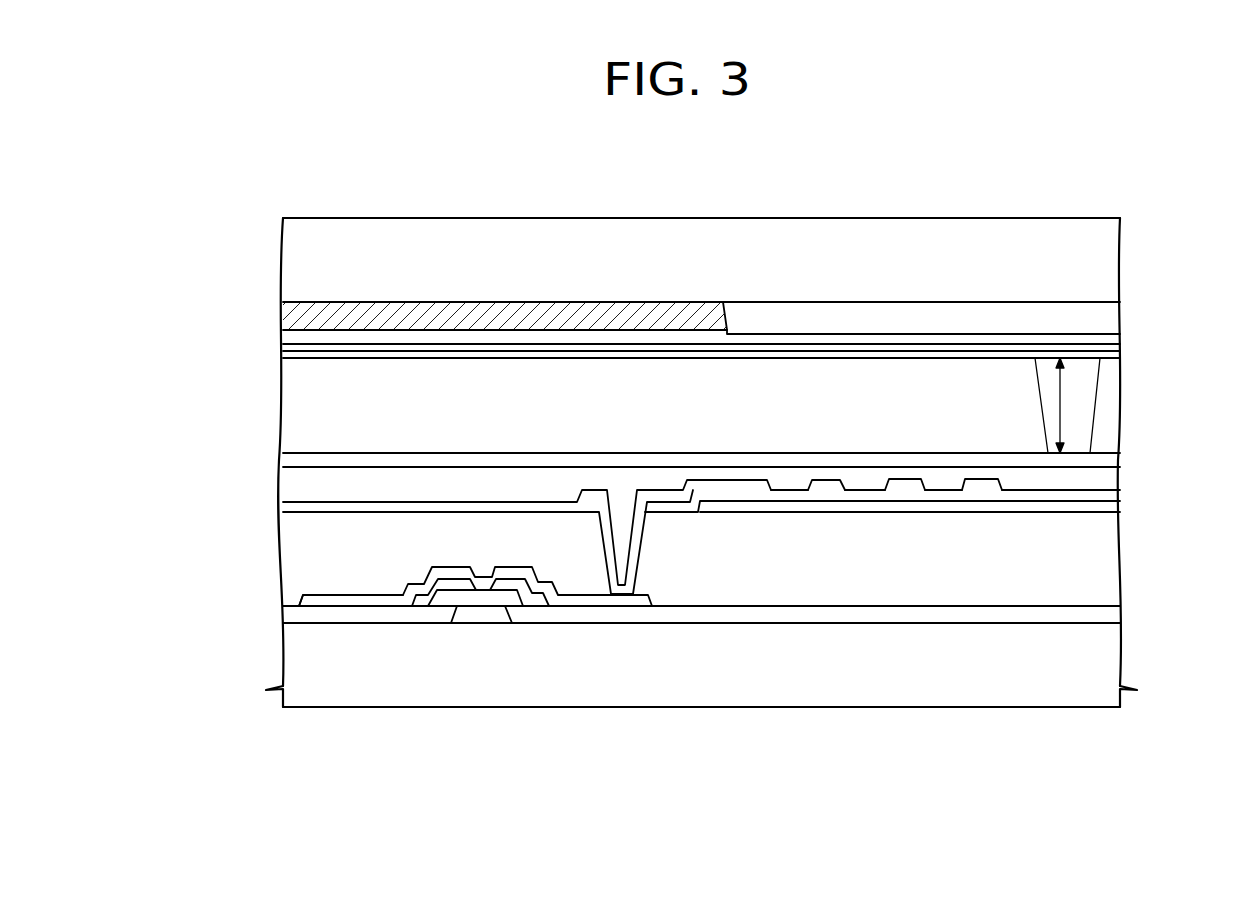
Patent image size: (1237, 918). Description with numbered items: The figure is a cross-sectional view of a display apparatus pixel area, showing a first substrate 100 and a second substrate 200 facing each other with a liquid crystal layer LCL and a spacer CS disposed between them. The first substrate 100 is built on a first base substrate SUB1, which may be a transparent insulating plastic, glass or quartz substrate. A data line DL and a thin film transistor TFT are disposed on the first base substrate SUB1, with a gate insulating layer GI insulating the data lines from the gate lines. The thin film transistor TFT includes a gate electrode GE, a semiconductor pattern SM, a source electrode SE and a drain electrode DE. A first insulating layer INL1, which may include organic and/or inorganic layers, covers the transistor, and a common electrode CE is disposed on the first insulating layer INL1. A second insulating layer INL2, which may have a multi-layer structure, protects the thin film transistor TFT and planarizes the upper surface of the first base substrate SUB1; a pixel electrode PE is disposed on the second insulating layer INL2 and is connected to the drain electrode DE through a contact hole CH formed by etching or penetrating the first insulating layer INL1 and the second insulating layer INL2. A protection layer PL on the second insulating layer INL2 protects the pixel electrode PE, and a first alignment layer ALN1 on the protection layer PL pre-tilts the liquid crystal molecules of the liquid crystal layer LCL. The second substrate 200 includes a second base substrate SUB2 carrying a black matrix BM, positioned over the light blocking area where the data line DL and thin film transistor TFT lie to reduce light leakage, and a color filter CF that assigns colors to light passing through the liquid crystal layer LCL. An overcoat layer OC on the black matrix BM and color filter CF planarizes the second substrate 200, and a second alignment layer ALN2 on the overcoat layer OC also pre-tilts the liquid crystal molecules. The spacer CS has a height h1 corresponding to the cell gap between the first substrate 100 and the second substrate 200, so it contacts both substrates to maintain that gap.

The second substrate 200 is at (190, 250).
The first substrate 100 is at (190, 452).
The second base substrate SUB2 is at (290, 260).
The black matrix BM is at (290, 318).
The color filter CF is at (1110, 320).
The overcoat layer OC is at (290, 337).
The second alignment layer ALN2 is at (290, 352).
The spacer CS is at (1092, 380).
The height h1 is at (1073, 405).
The liquid crystal layer LCL is at (290, 405).
The first alignment layer ALN1 is at (290, 458).
The protection layer PL is at (1110, 475).
The pixel electrode PE is at (733, 486).
The second insulating layer INL2 is at (1110, 493).
The common electrode CE is at (1110, 508).
The first insulating layer INL1 is at (1110, 560).
The contact hole CH is at (645, 559).
The data line DL is at (325, 602).
The thin film transistor TFT is at (560, 775).
The source electrode SE is at (397, 600).
The semiconductor pattern SM is at (427, 600).
The gate electrode GE is at (491, 612).
The drain electrode DE is at (585, 600).
The gate insulating layer GI is at (290, 610).
The first base substrate SUB1 is at (290, 660).